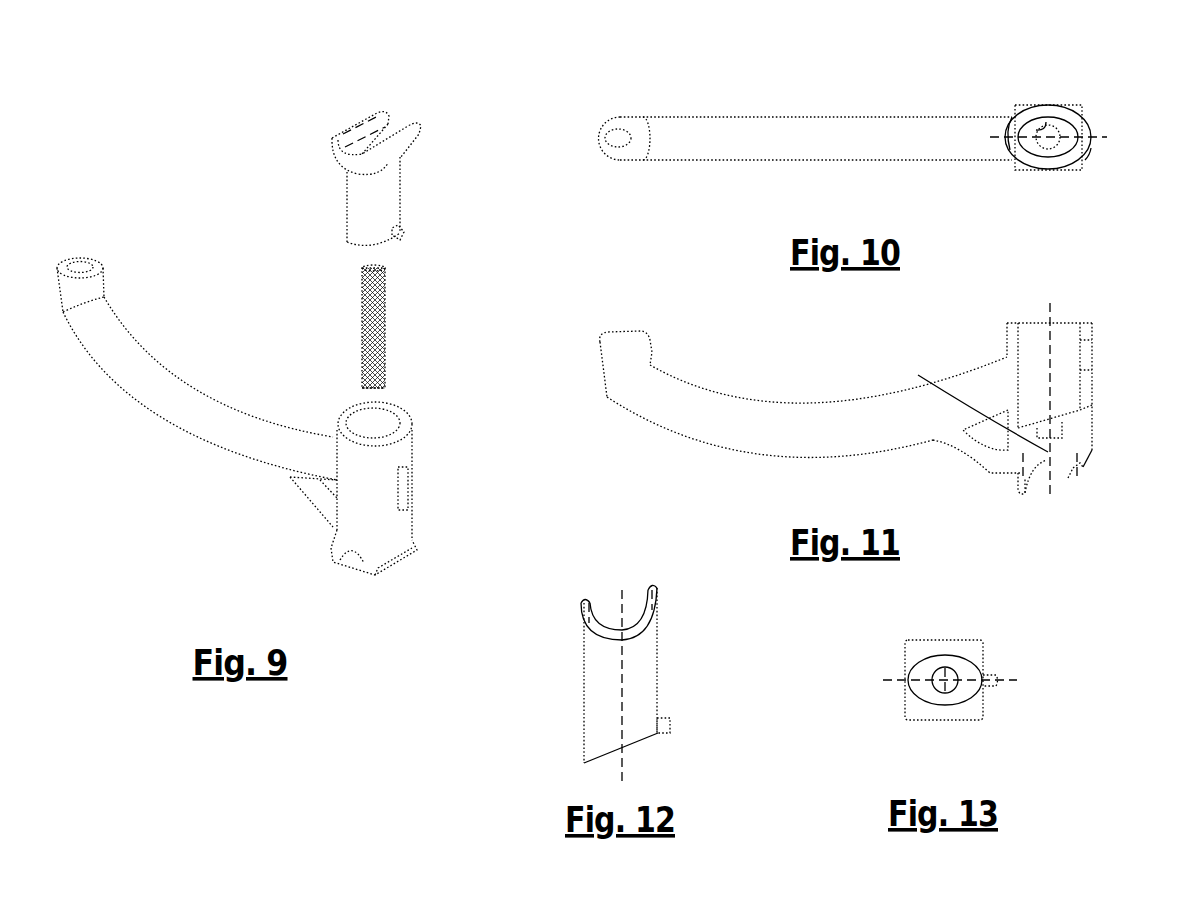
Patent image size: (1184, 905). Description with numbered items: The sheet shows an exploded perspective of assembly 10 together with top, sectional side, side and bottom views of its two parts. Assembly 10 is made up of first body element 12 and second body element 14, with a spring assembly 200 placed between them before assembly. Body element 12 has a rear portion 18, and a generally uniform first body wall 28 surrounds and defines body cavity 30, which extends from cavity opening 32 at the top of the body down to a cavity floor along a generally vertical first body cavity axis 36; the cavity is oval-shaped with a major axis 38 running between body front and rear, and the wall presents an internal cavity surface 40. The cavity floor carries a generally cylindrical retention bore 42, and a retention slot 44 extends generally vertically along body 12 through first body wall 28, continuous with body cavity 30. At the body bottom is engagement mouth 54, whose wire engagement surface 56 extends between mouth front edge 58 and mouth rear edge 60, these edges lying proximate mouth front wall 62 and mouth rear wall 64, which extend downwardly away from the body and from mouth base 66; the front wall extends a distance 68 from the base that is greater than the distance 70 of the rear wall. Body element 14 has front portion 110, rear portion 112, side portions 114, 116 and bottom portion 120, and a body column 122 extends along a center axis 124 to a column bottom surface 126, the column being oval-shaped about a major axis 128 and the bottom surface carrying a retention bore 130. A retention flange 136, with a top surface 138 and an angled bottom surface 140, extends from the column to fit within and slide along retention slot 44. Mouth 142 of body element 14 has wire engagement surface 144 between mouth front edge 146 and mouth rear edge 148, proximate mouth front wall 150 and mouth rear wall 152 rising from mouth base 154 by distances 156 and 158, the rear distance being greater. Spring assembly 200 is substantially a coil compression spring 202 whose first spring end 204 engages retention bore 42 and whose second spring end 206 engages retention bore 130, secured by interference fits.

In FIG. 9, the assembly 10 is at (151, 130).
In FIG. 9, the first body element 12 is at (132, 481).
In FIG. 10, the first body element 12 is at (836, 87).
In FIG. 11, the first body element 12 is at (820, 345).
In FIG. 9, the second body element 14 is at (292, 195).
In FIG. 12, the second body element 14 is at (468, 671).
In FIG. 13, the second body element 14 is at (864, 683).
In FIG. 11, the rear portion 18 is at (1090, 433).
In FIG. 9, the first body wall 28 is at (398, 440).
In FIG. 10, the first body wall 28 is at (1075, 172).
In FIG. 11, the first body wall 28 is at (1010, 338).
In FIG. 9, the body cavity 30 is at (380, 427).
In FIG. 10, the body cavity 30 is at (1066, 124).
In FIG. 9, the cavity opening 32 is at (350, 408).
In FIG. 10, the cavity opening 32 is at (1022, 152).
In FIG. 11, the cavity opening 32 is at (1024, 320).
In FIG. 11, the first body cavity axis 36 is at (1054, 330).
In FIG. 10, the major axis 38 is at (1090, 150).
In FIG. 10, the internal cavity surface 40 is at (1046, 122).
In FIG. 11, the internal cavity surface 40 is at (1080, 350).
In FIG. 10, the retention bore 42 is at (1048, 146).
In FIG. 11, the retention bore 42 is at (1057, 427).
In FIG. 9, the retention slot 44 is at (408, 488).
In FIG. 11, the retention slot 44 is at (1087, 390).
In FIG. 11, the engagement mouth 54 is at (1050, 518).
In FIG. 11, the wire engagement surface 56 is at (1047, 460).
In FIG. 11, the mouth front edge 58 is at (1025, 492).
In FIG. 11, the mouth rear edge 60 is at (1073, 470).
In FIG. 11, the mouth front wall 62 is at (1018, 481).
In FIG. 11, the mouth rear wall 64 is at (1078, 471).
In FIG. 11, the mouth base 66 is at (970, 404).
In FIG. 11, the distance 68 is at (1022, 466).
In FIG. 11, the distance 70 is at (1080, 470).
In FIG. 12, the front portion 110 is at (585, 693).
In FIG. 13, the front portion 110 is at (910, 680).
In FIG. 12, the rear portion 112 is at (660, 648).
In FIG. 13, the rear portion 112 is at (978, 672).
In FIG. 12, the side portion 114 is at (612, 682).
In FIG. 13, the side portion 114 is at (950, 655).
In FIG. 13, the side portion 116 is at (948, 705).
In FIG. 12, the bottom portion 120 is at (610, 750).
In FIG. 12, the body column 122 is at (604, 701).
In FIG. 12, the center axis 124 is at (622, 670).
In FIG. 12, the column bottom surface 126 is at (610, 754).
In FIG. 13, the column bottom surface 126 is at (928, 694).
In FIG. 13, the major axis 128 is at (913, 684).
In FIG. 13, the retention bore 130 is at (950, 685).
In FIG. 9, the retention flange 136 is at (403, 240).
In FIG. 12, the retention flange 136 is at (664, 728).
In FIG. 13, the retention flange 136 is at (996, 678).
In FIG. 12, the top surface 138 is at (664, 720).
In FIG. 12, the angled bottom surface 140 is at (664, 732).
In FIG. 12, the mouth 142 is at (621, 556).
In FIG. 12, the wire engagement surface 144 is at (610, 623).
In FIG. 12, the mouth front edge 146 is at (588, 600).
In FIG. 12, the mouth rear edge 148 is at (653, 586).
In FIG. 12, the mouth front wall 150 is at (584, 605).
In FIG. 12, the mouth rear wall 152 is at (656, 600).
In FIG. 12, the mouth base 154 is at (610, 630).
In FIG. 12, the distance 156 is at (587, 620).
In FIG. 12, the distance 158 is at (660, 612).
In FIG. 9, the spring assembly 200 is at (494, 327).
In FIG. 9, the spring 202 is at (361, 328).
In FIG. 9, the first spring end 204 is at (376, 384).
In FIG. 9, the second spring end 206 is at (385, 268).